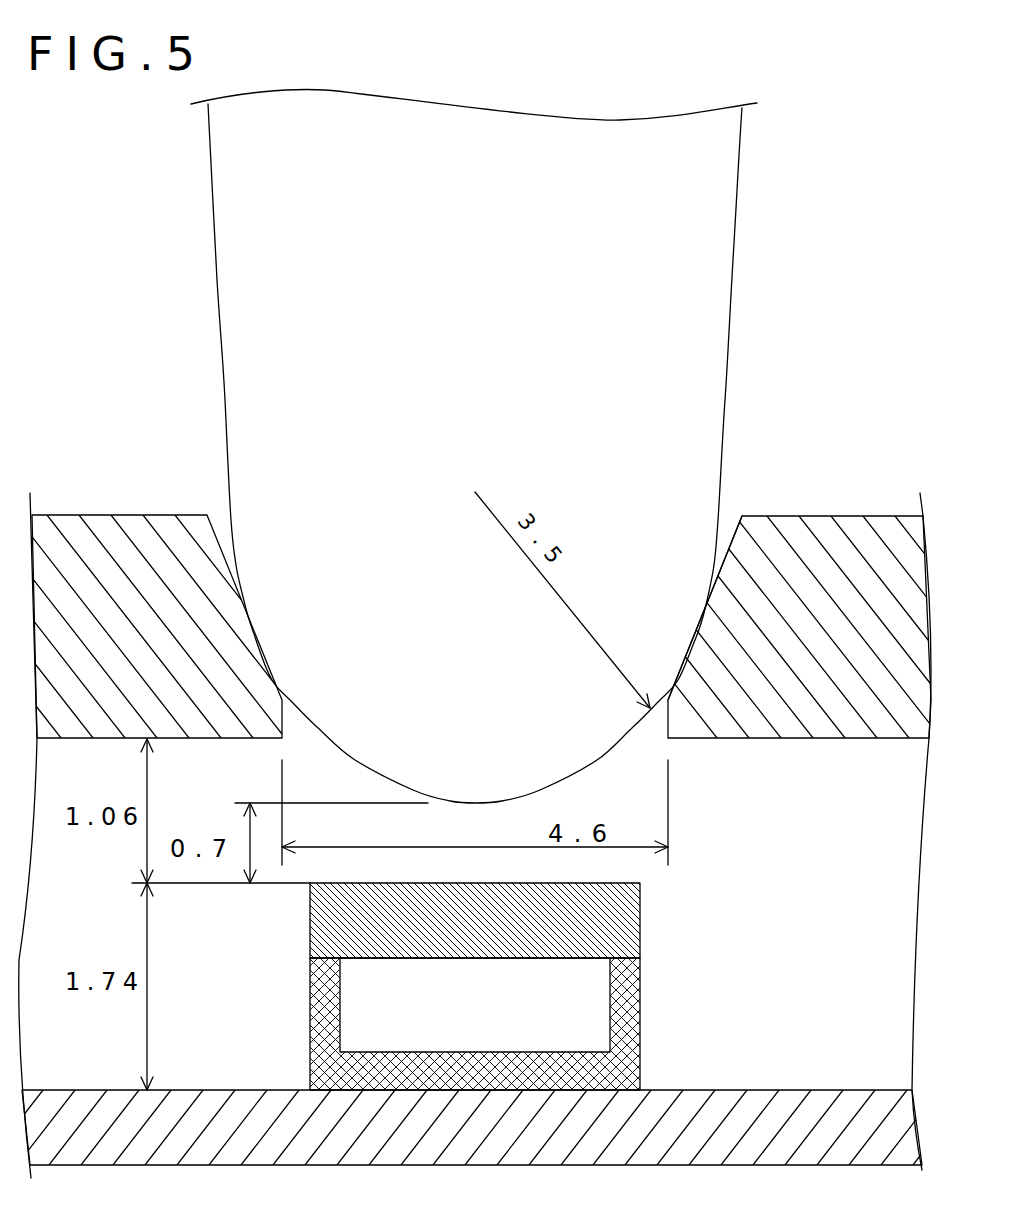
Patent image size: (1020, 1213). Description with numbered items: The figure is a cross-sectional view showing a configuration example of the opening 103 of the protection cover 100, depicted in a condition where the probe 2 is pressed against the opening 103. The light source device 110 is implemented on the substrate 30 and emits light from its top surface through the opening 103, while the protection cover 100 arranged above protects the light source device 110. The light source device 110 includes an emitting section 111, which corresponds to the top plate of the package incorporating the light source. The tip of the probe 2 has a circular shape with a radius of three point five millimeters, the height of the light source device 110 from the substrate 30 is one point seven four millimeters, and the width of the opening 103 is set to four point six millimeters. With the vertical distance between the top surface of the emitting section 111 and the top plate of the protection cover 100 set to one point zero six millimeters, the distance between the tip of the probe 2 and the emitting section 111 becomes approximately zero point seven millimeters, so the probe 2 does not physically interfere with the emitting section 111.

The probe 2 is at (735, 305).
The substrate 30 is at (787, 1090).
The protection cover 100 is at (814, 515).
The opening 103 is at (726, 517).
The light source device 110 is at (651, 998).
The emitting section 111 is at (641, 921).